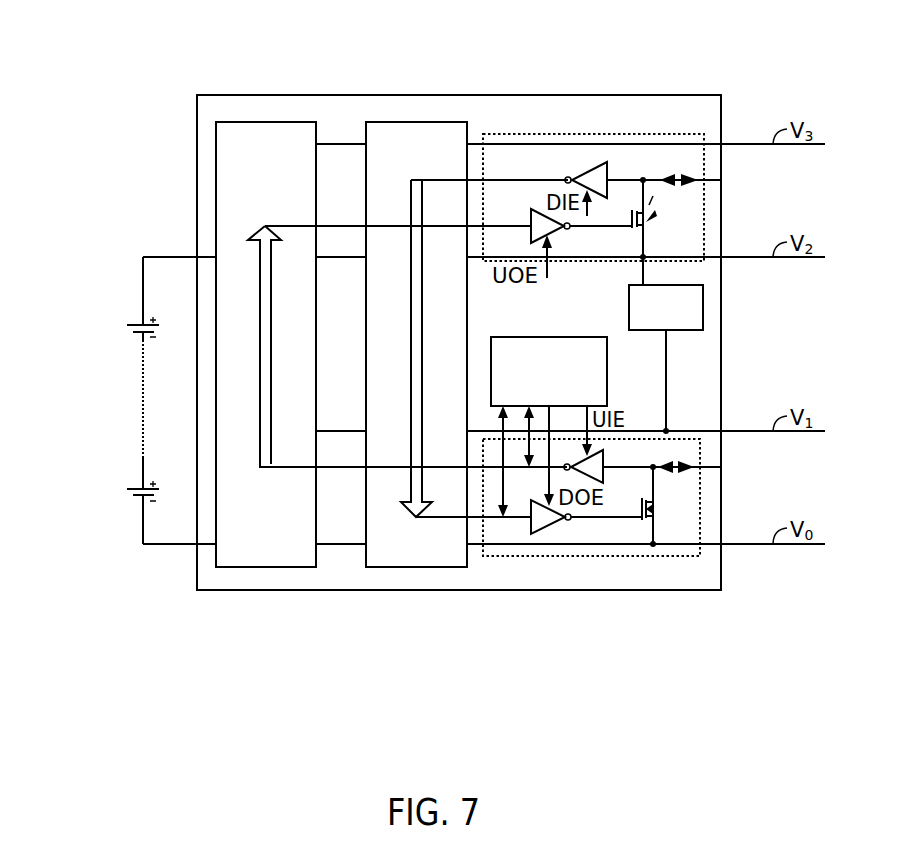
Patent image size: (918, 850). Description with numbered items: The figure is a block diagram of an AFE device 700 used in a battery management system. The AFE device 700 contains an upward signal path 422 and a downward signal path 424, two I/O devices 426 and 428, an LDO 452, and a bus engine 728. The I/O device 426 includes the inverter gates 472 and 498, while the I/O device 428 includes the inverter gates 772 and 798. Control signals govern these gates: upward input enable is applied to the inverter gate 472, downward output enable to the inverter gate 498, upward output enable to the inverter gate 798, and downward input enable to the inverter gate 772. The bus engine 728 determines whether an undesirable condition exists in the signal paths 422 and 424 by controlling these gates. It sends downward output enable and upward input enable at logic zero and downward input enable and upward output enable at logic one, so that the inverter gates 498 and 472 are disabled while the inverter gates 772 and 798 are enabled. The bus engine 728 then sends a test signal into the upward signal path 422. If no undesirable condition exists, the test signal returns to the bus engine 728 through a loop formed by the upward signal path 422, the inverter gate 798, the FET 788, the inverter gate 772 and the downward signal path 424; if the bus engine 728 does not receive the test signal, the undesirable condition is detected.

The AFE device 700 is at (158, 92).
The upward signal path 422 is at (267, 122).
The downward signal path 424 is at (420, 122).
The I/O device 428 is at (639, 134).
The I/O device 426 is at (647, 556).
The inverter gate 772 is at (607, 166).
The inverter gate 798 is at (531, 212).
The FET 788 is at (664, 218).
The LDO 452 is at (629, 307).
The bus engine 728 is at (558, 337).
The inverter gate 472 is at (603, 462).
The inverter gate 498 is at (551, 524).